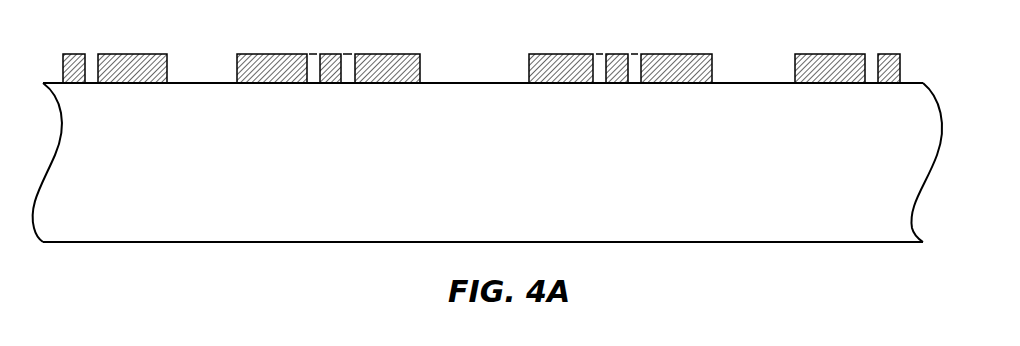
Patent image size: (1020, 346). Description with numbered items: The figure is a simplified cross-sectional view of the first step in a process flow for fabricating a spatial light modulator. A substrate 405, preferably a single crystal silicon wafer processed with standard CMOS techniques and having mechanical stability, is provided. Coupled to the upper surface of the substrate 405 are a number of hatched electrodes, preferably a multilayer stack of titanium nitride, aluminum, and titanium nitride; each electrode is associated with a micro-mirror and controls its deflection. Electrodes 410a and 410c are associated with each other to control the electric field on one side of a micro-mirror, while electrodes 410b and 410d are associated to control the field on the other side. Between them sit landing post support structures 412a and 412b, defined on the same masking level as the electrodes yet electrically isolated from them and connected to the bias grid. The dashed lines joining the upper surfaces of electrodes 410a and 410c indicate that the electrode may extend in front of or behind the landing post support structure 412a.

The substrate 405 is at (878, 220).
The electrode 410a is at (270, 73).
The electrode 410b is at (563, 73).
The electrode 410c is at (387, 72).
The electrode 410d is at (682, 70).
The landing post support structure 412a is at (328, 70).
The landing post support structure 412b is at (617, 70).